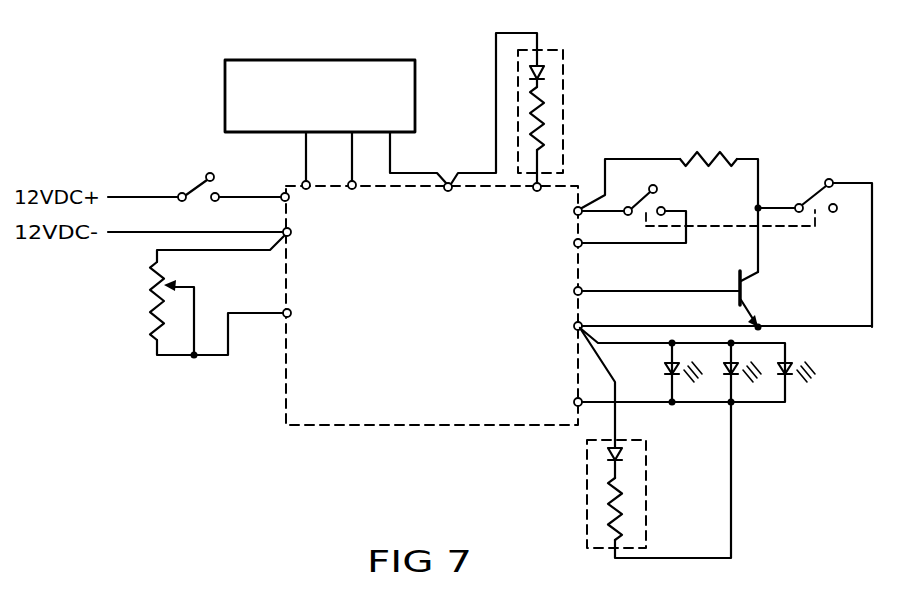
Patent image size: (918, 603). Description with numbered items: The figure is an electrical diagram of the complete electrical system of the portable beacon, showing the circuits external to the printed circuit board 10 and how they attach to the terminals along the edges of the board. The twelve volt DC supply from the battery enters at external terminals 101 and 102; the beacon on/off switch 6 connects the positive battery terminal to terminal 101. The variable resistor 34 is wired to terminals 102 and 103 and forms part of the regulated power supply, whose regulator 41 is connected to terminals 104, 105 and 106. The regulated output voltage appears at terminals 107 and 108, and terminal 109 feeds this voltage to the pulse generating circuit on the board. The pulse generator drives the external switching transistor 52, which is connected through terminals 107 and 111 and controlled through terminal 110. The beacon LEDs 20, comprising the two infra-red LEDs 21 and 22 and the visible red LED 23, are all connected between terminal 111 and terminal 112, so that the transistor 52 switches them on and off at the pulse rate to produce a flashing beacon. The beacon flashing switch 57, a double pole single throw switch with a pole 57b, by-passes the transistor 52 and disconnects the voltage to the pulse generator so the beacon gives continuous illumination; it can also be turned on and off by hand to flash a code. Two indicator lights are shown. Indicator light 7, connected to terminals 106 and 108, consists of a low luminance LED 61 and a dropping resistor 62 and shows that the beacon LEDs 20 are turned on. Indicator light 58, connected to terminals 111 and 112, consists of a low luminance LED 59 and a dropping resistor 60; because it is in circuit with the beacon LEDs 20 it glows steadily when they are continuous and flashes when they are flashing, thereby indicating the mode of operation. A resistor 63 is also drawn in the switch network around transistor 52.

The beacon on/off switch 6 is at (192, 180).
The indicator light 7 is at (595, 103).
The printed circuit board 10 is at (400, 375).
The beacon LEDs 20 is at (714, 443).
The infra-red LED 21 is at (658, 376).
The infra-red LED 22 is at (717, 380).
The visible light LED 23 is at (806, 362).
The variable resistor 34 is at (155, 356).
The regulator 41 is at (253, 60).
The switching transistor 52 is at (753, 288).
The beacon flashing switch 57 is at (813, 229).
The beacon flashing switch pole 57b is at (813, 180).
The indicator light 58 is at (588, 494).
The low luminence LED 59 is at (620, 453).
The dropping resistor 60 is at (625, 510).
The low luminence LED 61 is at (548, 72).
The dropping resistor 62 is at (545, 136).
The resistor 63 is at (712, 155).
The external terminal 101 is at (288, 190).
The external terminal 102 is at (266, 224).
The PCB terminal 103 is at (267, 304).
The terminal 104 is at (309, 189).
The terminal 105 is at (355, 189).
The terminal 106 is at (446, 191).
The terminal 107 is at (574, 214).
The terminal 108 is at (534, 190).
The terminal 109 is at (574, 246).
The terminal 110 is at (574, 294).
The anode terminal 111 is at (574, 329).
The terminal 112 is at (573, 403).